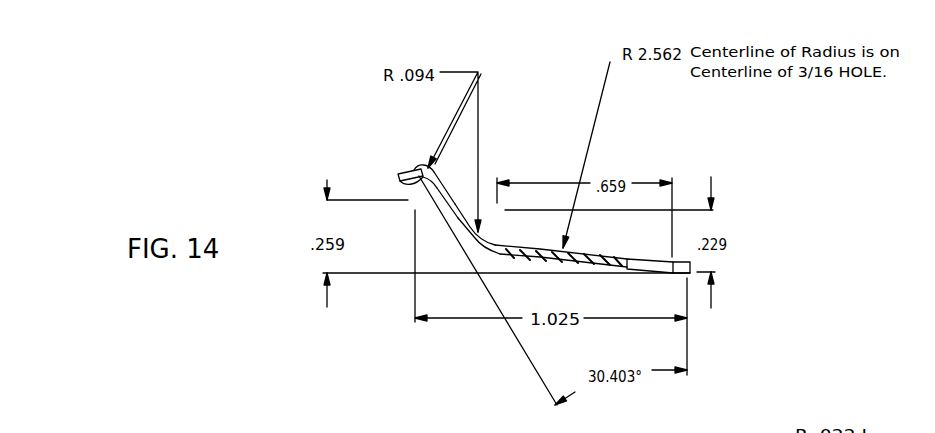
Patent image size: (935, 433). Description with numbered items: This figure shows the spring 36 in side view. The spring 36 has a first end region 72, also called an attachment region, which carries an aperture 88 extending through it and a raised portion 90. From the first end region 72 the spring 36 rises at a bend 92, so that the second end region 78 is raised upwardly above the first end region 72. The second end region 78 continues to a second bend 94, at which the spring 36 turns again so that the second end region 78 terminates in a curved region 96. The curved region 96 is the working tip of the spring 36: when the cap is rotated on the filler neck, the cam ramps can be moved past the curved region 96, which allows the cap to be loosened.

The second end region 78 is at (420, 165).
The spring 36 is at (418, 170).
The second bend 94 is at (427, 177).
The curved region 96 is at (440, 166).
The bend 92 is at (465, 235).
The raised portion 90 is at (530, 262).
The aperture 88 is at (630, 263).
The first end region 72 is at (633, 277).